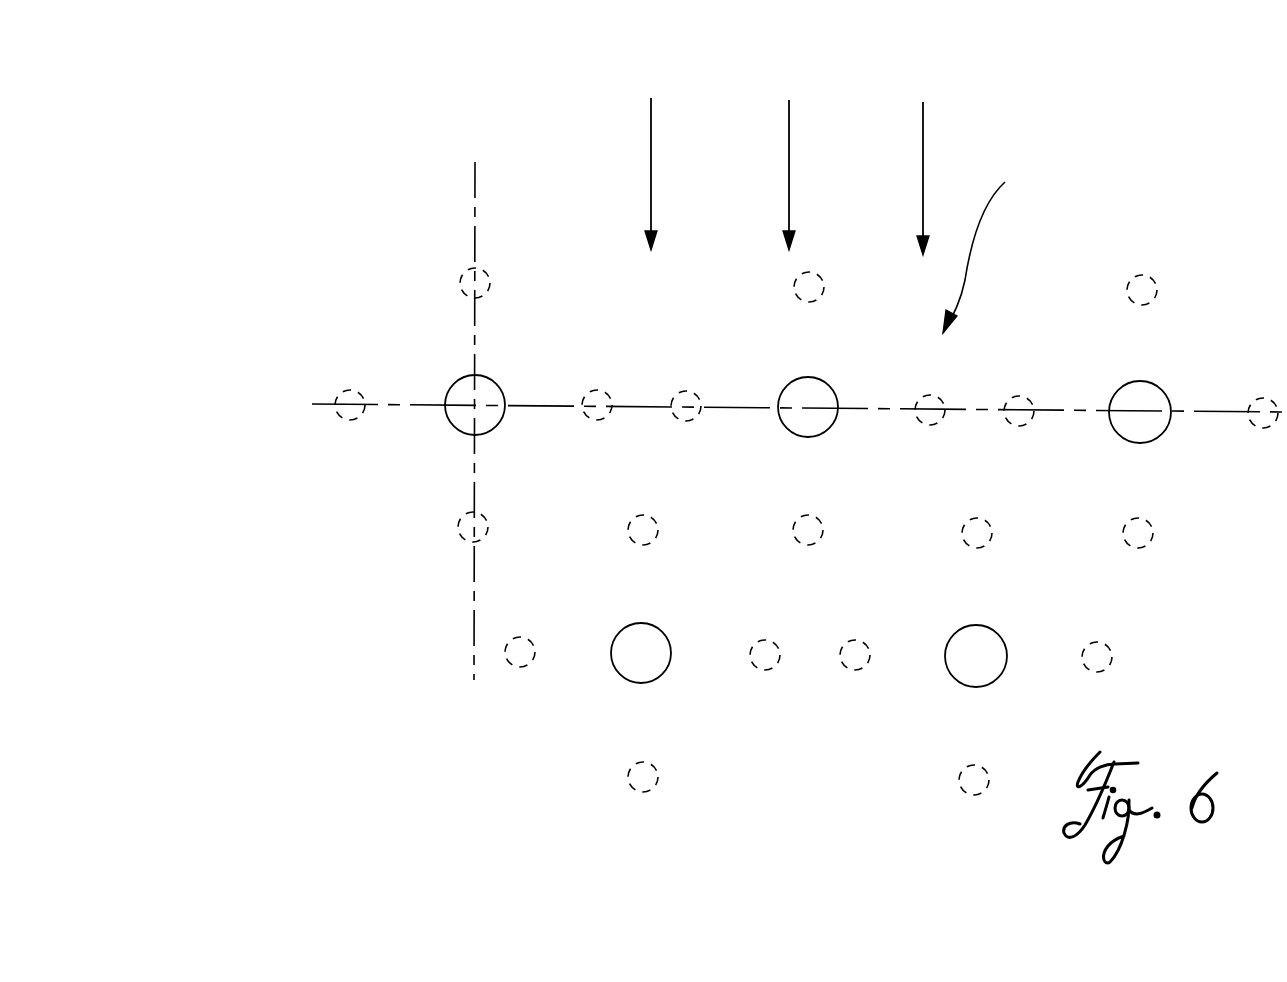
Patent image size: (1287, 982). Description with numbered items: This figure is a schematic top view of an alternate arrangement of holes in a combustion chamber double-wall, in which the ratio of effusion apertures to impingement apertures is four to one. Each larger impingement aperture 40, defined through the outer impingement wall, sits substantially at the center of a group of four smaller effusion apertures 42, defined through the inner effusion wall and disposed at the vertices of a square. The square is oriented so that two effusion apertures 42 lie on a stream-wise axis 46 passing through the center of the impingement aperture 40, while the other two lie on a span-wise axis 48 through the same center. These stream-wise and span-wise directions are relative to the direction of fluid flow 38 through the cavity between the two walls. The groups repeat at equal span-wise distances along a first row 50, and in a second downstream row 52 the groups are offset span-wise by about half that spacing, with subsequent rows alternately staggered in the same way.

The direction of fluid flow 38 is at (652, 140).
The impingement aperture 40 is at (482, 390).
The effusion aperture 42 is at (488, 277).
The stream-wise axis 46 is at (475, 248).
The span-wise axis 48 is at (1067, 410).
The first row 50 is at (283, 403).
The second downstream row 52 is at (405, 622).